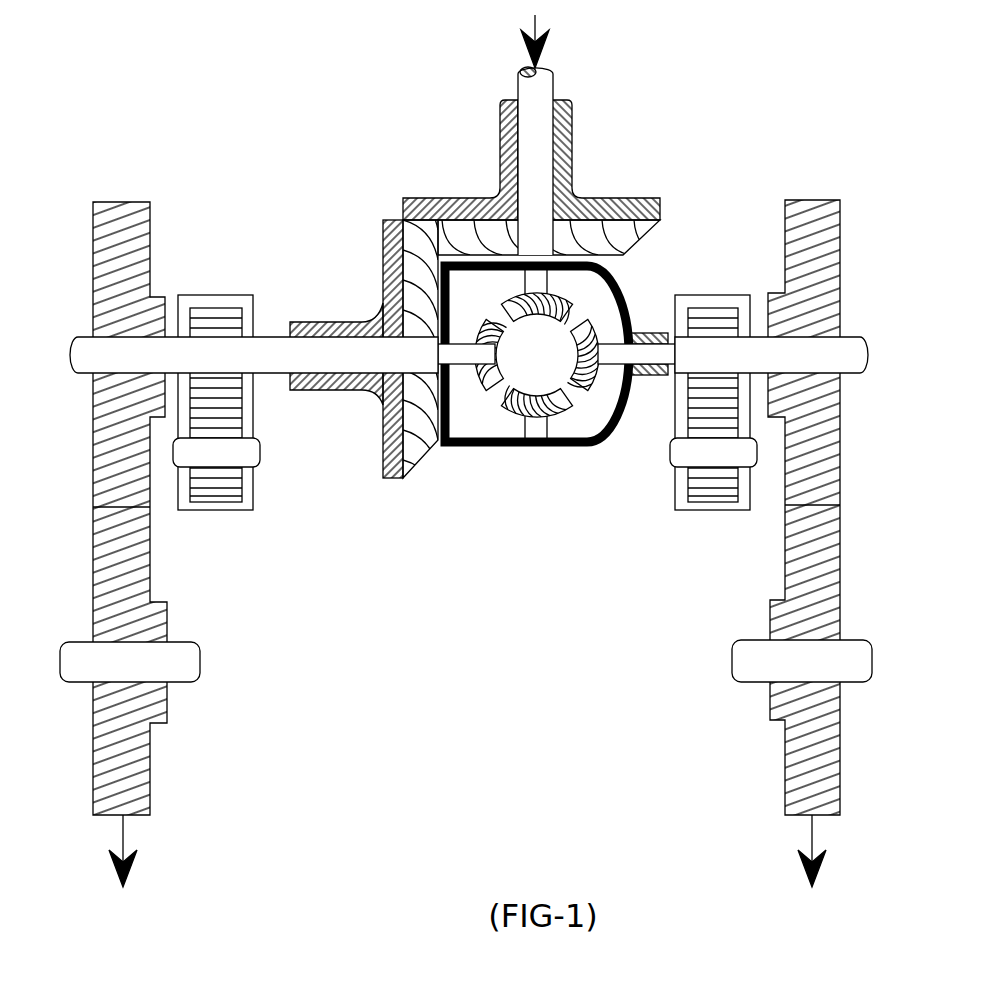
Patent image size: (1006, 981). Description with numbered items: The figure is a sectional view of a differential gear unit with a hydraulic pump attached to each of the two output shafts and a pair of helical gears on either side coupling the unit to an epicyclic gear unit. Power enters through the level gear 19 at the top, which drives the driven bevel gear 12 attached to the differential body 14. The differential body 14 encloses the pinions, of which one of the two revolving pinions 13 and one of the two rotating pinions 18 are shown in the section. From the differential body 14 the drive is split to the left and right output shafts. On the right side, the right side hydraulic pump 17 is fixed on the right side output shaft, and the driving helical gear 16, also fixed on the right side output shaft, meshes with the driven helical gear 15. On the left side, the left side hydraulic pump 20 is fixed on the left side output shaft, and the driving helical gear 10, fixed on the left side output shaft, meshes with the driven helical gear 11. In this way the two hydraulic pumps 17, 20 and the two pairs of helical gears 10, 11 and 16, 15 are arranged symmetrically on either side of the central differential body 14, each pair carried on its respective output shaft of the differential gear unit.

The driving helical gear 10 is at (104, 485).
The driven helical gear 11 is at (167, 741).
The driven bevel gear 12 is at (364, 535).
The revolving pinion 13 is at (537, 586).
The differential body 14 is at (539, 573).
The driven helical gear 15 is at (835, 759).
The driving helical gear 16 is at (875, 543).
The right side hydraulic pump 17 is at (712, 297).
The rotating pinion 18 is at (647, 229).
The level gear 19 is at (532, 169).
The left side hydraulic pump 20 is at (215, 297).